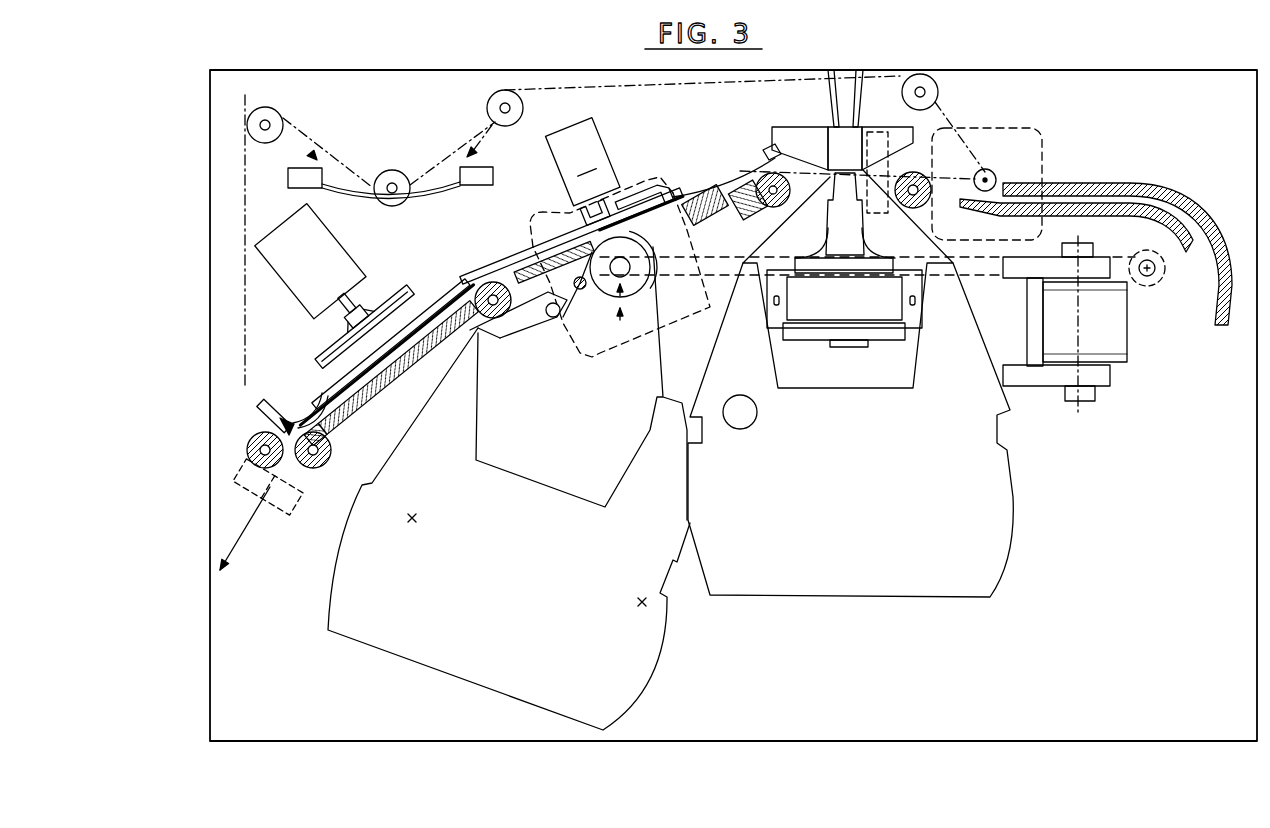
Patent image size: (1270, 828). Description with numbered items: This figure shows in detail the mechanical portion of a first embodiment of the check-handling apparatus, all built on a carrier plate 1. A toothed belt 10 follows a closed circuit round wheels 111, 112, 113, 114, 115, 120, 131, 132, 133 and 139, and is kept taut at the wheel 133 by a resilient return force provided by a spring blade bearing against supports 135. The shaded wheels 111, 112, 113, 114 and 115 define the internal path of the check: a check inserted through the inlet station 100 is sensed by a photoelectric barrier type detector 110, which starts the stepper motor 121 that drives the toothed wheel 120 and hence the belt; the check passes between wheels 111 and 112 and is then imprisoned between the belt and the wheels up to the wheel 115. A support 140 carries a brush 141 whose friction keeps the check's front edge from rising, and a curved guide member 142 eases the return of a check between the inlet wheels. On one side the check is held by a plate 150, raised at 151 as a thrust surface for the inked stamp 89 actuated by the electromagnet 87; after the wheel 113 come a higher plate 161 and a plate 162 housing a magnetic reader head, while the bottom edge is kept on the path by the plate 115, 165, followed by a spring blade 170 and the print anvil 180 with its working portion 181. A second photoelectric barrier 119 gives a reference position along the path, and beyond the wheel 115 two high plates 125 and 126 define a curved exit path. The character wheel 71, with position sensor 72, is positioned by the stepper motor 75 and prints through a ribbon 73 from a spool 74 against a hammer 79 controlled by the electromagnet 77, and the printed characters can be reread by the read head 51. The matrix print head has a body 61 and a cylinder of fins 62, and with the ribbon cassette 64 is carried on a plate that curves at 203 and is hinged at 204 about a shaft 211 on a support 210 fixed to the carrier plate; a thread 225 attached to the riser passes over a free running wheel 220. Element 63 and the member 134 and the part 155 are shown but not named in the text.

The carrier plate 1 is at (210, 643).
The toothed belt 10 is at (708, 84).
The read head 51 is at (748, 220).
The body of the print head 61 is at (860, 310).
The cylinder of fins 62 is at (828, 187).
The support 63 is at (779, 228).
The cassette 64 is at (890, 390).
The wheel 71 is at (635, 290).
The position reference sensor 72 is at (616, 319).
The ribbon 73 is at (514, 333).
The spool 74 is at (482, 430).
The stepper motor 75 is at (592, 357).
The electromagnet 77 is at (583, 162).
The hammer 79 is at (567, 207).
The electromagnet 87 is at (310, 261).
The inked stamp 89 is at (354, 313).
The inlet station 100 is at (248, 532).
The photoelectric barrier type detector 110 is at (240, 470).
The wheel 111 is at (245, 450).
The wheel 112 is at (327, 458).
The wheel 113 is at (554, 262).
The wheel 114 is at (753, 174).
The wheel 115 is at (912, 210).
The second photoelectric barrier 119 is at (888, 138).
The toothed wheel 120 is at (988, 178).
The stepper motor 121 is at (1042, 142).
The high plate 125 is at (1122, 183).
The high plate 126 is at (1142, 207).
The wheel 131 is at (918, 75).
The wheel 132 is at (500, 90).
The wheel 133 is at (412, 202).
The guide plate 134 is at (362, 203).
The supports 135 is at (462, 150).
The wheel 139 is at (268, 108).
The support 140 is at (260, 413).
The brush 141 is at (293, 408).
The curved guide member 142 is at (316, 395).
The plate 150 is at (315, 434).
The higher portion of plate 151 is at (398, 368).
The conveyor frame 155 is at (368, 326).
The higher plate 161 is at (550, 282).
The plate 162 is at (690, 224).
The plate 165 is at (627, 204).
The spring blade 170 is at (760, 160).
The print anvil 180 is at (802, 130).
The working portion 181 is at (840, 170).
The carrier plate 203 is at (1043, 377).
The hinge 204 is at (1110, 378).
The support 210 is at (1113, 332).
The shaft 211 is at (1087, 404).
The free running wheel 220 is at (1150, 281).
The thread 225 is at (1010, 277).